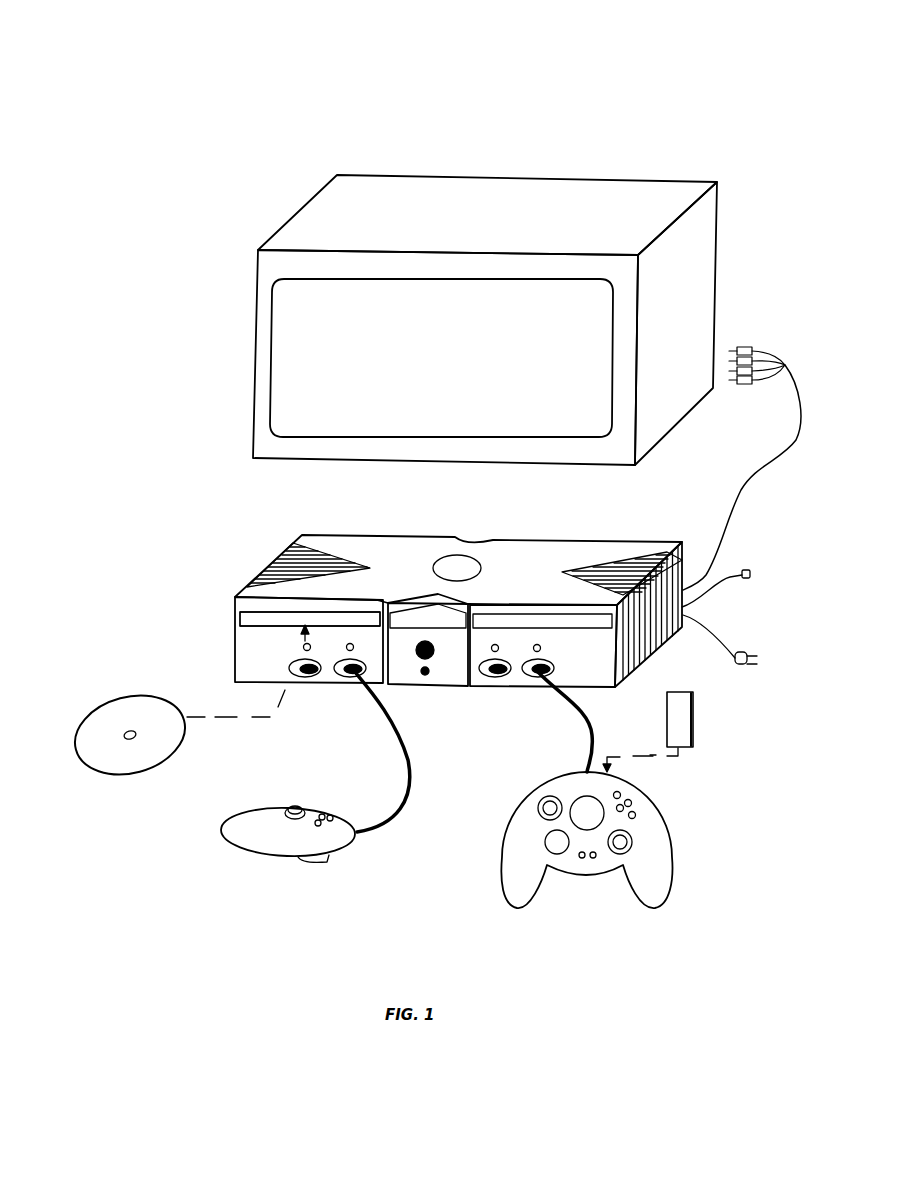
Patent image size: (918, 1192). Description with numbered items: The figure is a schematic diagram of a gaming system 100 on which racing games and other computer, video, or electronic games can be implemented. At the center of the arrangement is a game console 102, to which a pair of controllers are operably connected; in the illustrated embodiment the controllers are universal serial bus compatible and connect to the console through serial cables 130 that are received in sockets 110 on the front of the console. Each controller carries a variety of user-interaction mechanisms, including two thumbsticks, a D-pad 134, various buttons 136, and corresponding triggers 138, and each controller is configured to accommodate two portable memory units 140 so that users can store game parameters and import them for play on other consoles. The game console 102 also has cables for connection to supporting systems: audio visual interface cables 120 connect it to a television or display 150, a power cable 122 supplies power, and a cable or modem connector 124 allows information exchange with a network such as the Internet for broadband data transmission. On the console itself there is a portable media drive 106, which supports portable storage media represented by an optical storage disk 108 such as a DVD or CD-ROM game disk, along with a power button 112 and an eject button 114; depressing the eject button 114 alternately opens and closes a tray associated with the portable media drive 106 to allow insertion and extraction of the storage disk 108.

The gaming system 100 is at (698, 107).
The game console 102 is at (334, 528).
The portable media drive 106 is at (247, 615).
The optical storage disk 108 is at (139, 773).
The sockets 110 is at (350, 674).
The power button 112 is at (425, 676).
The eject button 114 is at (425, 641).
The audio visual interface cables 120 is at (770, 350).
The power cable 122 is at (740, 666).
The cable or modem connector 124 is at (718, 588).
The serial cables 130 is at (408, 762).
The D-pad 134 is at (545, 842).
The buttons 136 is at (640, 801).
The triggers 138 is at (330, 861).
The portable memory units 140 is at (693, 720).
The television or display 150 is at (309, 208).